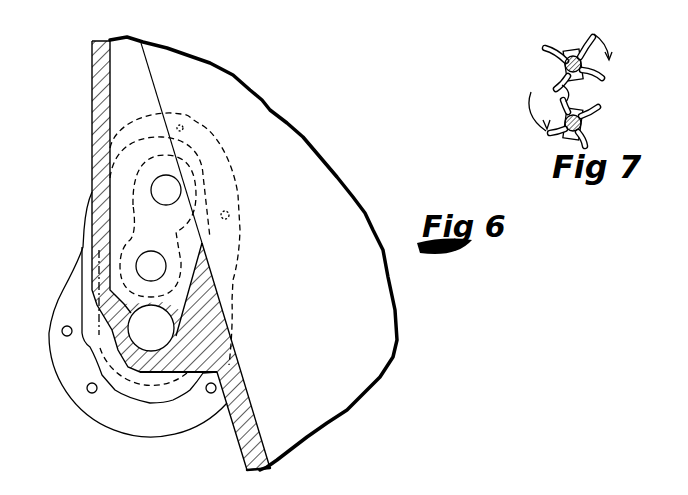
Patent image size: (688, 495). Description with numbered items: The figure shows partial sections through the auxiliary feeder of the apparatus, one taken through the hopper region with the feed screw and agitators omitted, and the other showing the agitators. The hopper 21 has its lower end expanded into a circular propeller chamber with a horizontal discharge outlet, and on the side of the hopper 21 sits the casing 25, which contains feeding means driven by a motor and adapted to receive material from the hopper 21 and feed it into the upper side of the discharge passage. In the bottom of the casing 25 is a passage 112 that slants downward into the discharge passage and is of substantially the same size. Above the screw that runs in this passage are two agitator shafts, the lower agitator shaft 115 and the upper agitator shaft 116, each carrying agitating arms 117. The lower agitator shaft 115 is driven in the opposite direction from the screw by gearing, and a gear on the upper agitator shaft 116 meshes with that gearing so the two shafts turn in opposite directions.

In FIG. 6, the hopper 21 is at (256, 416).
In FIG. 6, the casing 25 is at (108, 113).
In FIG. 6, the passage 112 is at (168, 329).
In FIG. 7, the lower agitator shaft 115 is at (583, 124).
In FIG. 7, the upper agitator shaft 116 is at (582, 64).
In FIG. 7, the agitating arms 117 is at (561, 87).